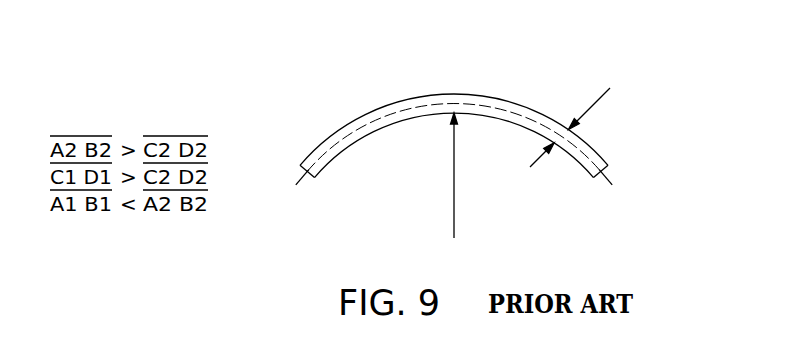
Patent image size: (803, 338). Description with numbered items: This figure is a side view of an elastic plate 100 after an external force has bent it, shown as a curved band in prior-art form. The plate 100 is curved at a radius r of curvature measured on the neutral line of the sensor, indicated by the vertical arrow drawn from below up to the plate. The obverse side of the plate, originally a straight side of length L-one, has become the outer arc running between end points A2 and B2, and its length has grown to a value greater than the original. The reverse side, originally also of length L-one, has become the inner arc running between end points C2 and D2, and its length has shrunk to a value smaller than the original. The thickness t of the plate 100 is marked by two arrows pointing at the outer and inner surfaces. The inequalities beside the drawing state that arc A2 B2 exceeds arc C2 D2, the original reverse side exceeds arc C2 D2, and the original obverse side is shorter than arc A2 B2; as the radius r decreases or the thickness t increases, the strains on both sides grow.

The elastic plate 100 is at (502, 100).
The end point of curved obverse arc A2 is at (282, 170).
The end point of curved obverse arc B2 is at (623, 170).
The end point of curved reverse arc C2 is at (316, 190).
The end point of curved reverse arc D2 is at (590, 186).
The radius of curvature r is at (464, 175).
The thickness t is at (576, 127).